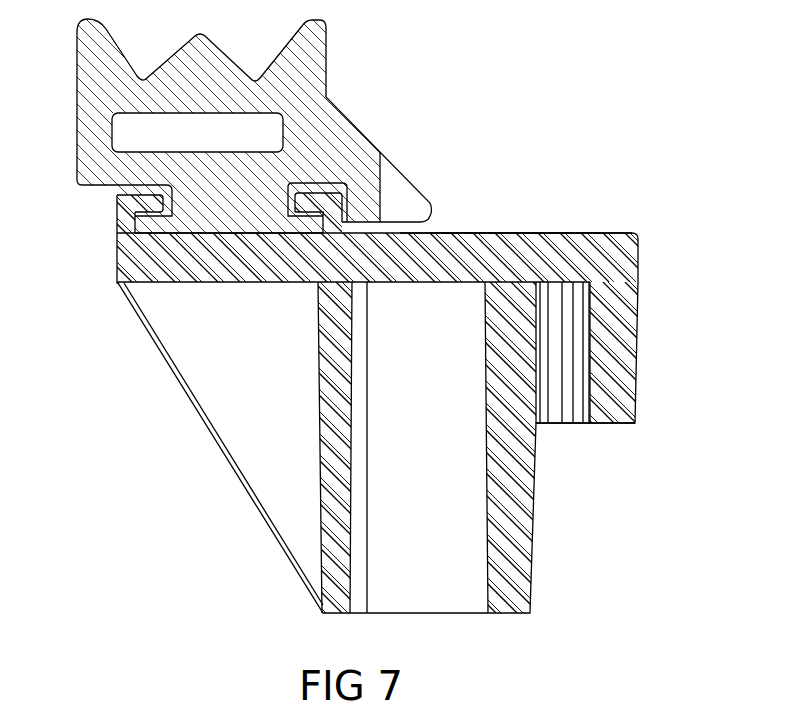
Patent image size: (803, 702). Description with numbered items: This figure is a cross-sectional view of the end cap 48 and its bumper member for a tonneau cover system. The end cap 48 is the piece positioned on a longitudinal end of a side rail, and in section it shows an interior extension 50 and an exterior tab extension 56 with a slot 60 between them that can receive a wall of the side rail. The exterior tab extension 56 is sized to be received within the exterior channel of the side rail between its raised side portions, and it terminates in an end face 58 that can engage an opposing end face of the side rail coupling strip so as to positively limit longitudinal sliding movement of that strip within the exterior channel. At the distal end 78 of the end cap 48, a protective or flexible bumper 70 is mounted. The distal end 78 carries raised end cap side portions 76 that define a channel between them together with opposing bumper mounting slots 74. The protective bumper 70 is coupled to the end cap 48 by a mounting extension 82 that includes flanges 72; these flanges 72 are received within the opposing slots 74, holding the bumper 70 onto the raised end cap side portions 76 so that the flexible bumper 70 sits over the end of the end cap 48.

The end cap 48 is at (507, 178).
The interior extension 50 is at (516, 520).
The exterior tab extension 56 is at (613, 366).
The end face 58 is at (613, 426).
The slot 60 is at (565, 316).
The protective bumper 70 is at (343, 116).
The flanges 72 is at (140, 235).
The bumper mounting slots 74 is at (150, 215).
The raised end cap side portions 76 is at (118, 205).
The distal end 78 is at (530, 232).
The mounting extension 82 is at (227, 203).